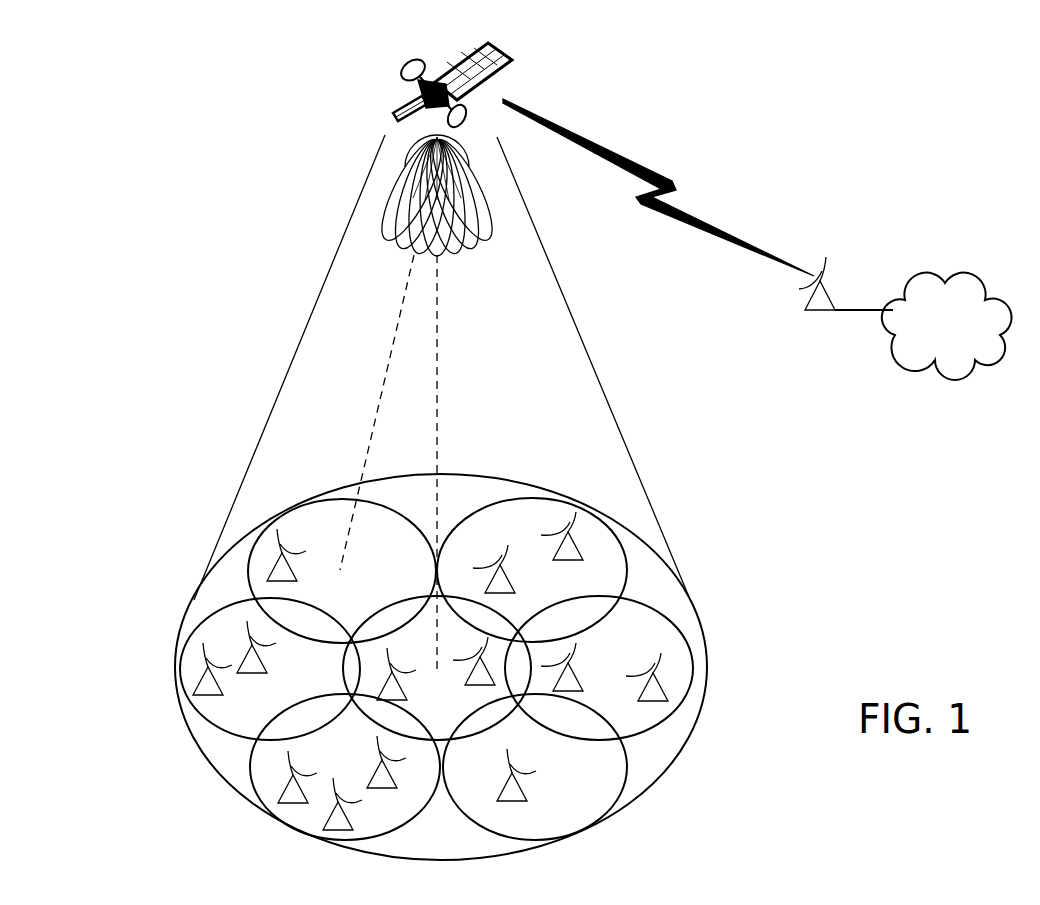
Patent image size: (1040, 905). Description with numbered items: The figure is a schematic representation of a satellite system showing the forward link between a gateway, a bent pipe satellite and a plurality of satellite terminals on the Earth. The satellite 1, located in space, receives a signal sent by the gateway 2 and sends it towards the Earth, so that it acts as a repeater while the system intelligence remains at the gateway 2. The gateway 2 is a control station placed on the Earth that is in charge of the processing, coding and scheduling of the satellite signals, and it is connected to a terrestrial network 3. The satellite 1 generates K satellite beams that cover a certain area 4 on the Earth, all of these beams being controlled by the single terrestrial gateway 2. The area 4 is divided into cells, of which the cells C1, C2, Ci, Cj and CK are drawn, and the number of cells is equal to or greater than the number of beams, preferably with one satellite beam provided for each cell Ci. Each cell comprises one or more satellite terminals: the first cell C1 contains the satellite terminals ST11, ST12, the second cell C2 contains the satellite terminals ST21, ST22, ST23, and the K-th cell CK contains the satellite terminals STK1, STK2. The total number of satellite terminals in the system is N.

The satellite 1 is at (378, 86).
The gateway 2 is at (816, 318).
The terrestrial network 3 is at (963, 277).
The area 4 is at (187, 730).
The cell Ci is at (249, 558).
The cell Cj is at (498, 728).
The cell C1 is at (197, 630).
The cell C2 is at (250, 765).
The cell CK is at (675, 717).
The satellite terminal ST11 is at (203, 683).
The satellite terminal ST12 is at (248, 653).
The satellite terminal ST21 is at (278, 795).
The satellite terminal ST22 is at (323, 822).
The satellite terminal ST23 is at (395, 790).
The satellite terminal STK1 is at (667, 687).
The satellite terminal STK2 is at (575, 680).